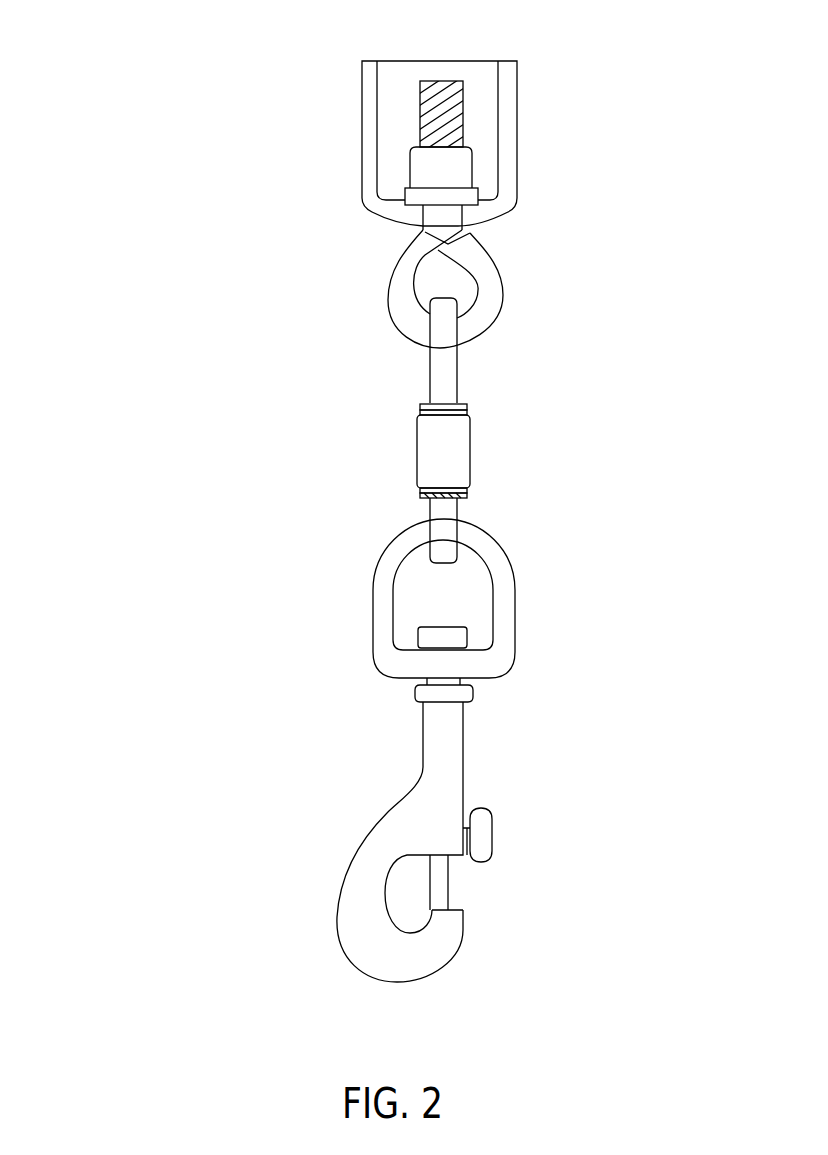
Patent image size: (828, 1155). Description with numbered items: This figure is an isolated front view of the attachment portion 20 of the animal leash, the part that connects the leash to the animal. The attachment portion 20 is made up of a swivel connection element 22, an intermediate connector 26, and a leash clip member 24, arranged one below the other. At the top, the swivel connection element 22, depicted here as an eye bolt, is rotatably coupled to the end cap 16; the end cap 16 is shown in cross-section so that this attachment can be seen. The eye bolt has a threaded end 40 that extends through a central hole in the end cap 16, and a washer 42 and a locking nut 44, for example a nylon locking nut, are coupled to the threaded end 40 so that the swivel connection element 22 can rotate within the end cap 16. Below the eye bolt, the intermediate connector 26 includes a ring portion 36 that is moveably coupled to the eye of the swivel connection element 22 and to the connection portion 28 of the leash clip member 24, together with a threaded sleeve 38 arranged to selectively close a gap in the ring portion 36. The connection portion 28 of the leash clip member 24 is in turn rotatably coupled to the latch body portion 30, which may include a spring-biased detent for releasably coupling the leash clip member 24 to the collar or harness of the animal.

The end cap 16 is at (517, 139).
The attachment portion 20 is at (145, 478).
The swivel connection element 22 is at (398, 290).
The leash clip member 24 is at (597, 813).
The intermediate connector 26 is at (503, 457).
The connection portion 28 is at (505, 608).
The latch body portion 30 is at (352, 907).
The ring portion 36 is at (447, 377).
The threaded sleeve 38 is at (430, 456).
The threaded end 40 is at (440, 83).
The washer 42 is at (478, 195).
The locking nut 44 is at (428, 168).